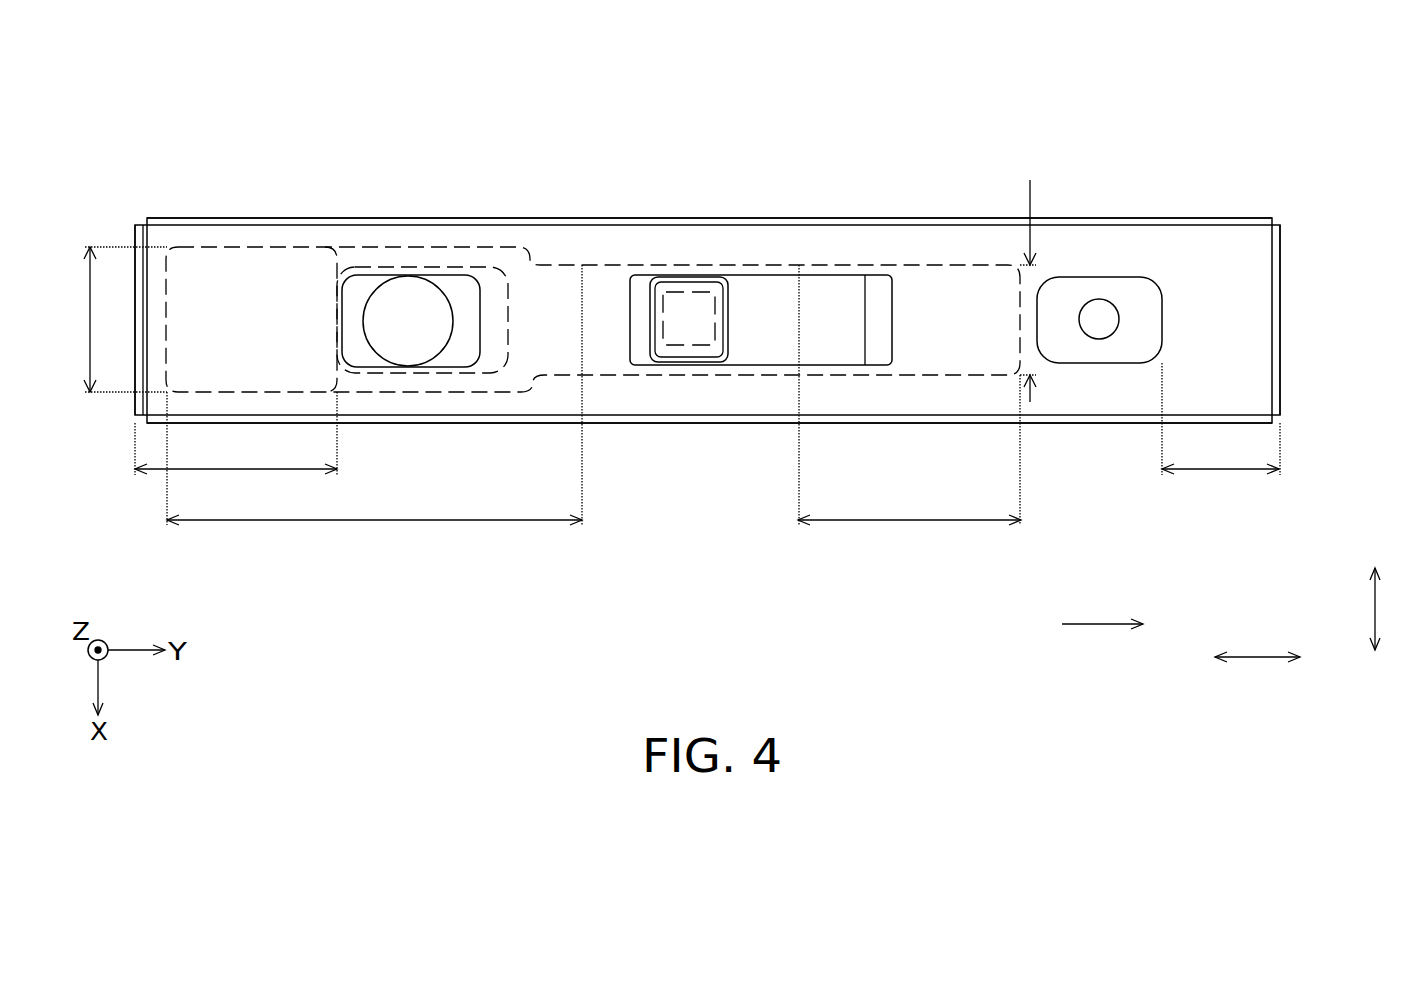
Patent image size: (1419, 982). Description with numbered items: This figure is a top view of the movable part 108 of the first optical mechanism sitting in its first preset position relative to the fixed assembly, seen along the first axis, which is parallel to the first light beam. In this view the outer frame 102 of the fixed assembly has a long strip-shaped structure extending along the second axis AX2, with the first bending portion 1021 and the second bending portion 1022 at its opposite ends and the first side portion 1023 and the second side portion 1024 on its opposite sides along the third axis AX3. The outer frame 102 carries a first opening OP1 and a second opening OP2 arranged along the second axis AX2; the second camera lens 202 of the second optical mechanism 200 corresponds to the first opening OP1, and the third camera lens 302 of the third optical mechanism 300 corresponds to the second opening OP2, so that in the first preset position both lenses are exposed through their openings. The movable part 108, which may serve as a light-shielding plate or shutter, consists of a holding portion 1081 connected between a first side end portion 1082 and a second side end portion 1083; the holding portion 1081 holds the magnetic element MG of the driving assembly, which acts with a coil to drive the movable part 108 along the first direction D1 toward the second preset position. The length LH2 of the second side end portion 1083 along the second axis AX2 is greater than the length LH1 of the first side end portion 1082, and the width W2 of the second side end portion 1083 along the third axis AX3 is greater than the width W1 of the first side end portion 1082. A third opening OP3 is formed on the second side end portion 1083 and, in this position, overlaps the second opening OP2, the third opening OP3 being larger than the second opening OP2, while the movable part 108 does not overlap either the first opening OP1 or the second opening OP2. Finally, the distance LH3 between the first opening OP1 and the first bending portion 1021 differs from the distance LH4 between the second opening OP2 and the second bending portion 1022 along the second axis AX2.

The outer frame 102 is at (1232, 218).
The first bending portion 1021 is at (1280, 314).
The second bending portion 1022 is at (135, 232).
The first side portion 1023 is at (1093, 420).
The second side portion 1024 is at (790, 223).
The movable part 108 is at (253, 247).
The holding portion 1081 is at (607, 293).
The first side end portion 1082 is at (947, 297).
The second side end portion 1083 is at (207, 287).
The first opening OP1 is at (1135, 277).
The second opening OP2 is at (457, 275).
The third opening OP3 is at (372, 265).
The third camera lens 302 is at (417, 298).
The third optical mechanism 300 is at (423, 234).
The second camera lens 202 is at (1096, 313).
The second optical mechanism 200 is at (1107, 221).
The magnetic element MG is at (688, 313).
The width of the first side end portion W1 is at (1009, 290).
The width of the second side end portion W2 is at (105, 319).
The length of the first side end portion LH1 is at (909, 450).
The length of the second side end portion LH2 is at (374, 458).
The distance between the first opening and the first bending portion LH3 is at (1221, 419).
The distance between the second opening and the second bending portion LH4 is at (236, 433).
The first direction D1 is at (1122, 624).
The second axis AX2 is at (1286, 658).
The third axis AX3 is at (1376, 595).